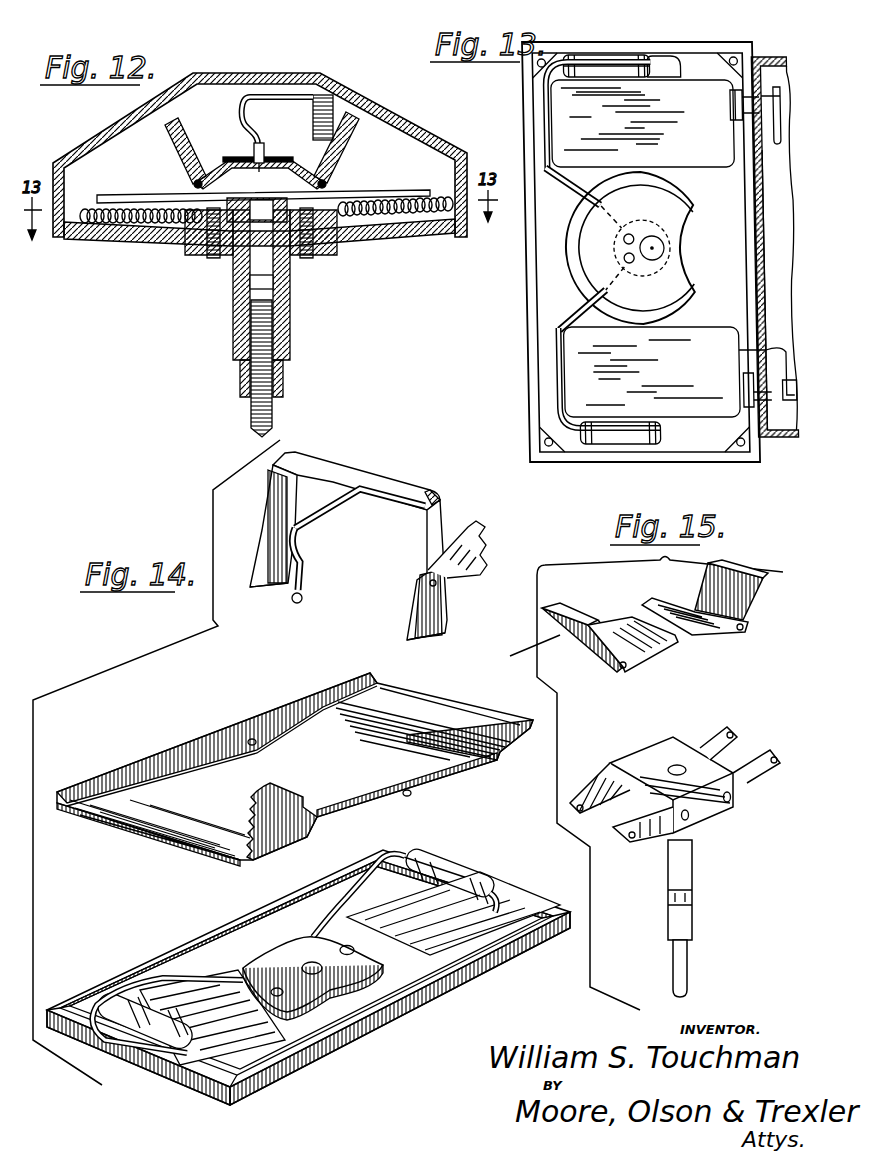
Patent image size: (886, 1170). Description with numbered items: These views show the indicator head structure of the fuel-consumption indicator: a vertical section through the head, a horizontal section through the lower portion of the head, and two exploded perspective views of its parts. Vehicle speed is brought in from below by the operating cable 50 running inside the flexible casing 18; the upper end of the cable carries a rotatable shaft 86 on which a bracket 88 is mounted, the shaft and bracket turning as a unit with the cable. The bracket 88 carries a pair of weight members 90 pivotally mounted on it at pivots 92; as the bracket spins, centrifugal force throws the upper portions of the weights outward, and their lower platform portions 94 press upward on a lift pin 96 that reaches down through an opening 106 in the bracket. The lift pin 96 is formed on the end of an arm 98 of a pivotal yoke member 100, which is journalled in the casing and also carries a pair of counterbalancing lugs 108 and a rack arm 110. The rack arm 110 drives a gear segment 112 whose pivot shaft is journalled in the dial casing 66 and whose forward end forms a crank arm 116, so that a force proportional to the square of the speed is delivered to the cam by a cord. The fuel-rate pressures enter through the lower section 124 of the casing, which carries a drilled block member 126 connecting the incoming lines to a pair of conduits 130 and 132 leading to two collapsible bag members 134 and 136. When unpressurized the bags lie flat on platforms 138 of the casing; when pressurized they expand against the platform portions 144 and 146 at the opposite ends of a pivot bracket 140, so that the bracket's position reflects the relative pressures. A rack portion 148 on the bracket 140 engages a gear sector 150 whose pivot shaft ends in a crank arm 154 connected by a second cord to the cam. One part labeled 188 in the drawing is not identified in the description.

In FIG. 12, the flexible casing 18 is at (283, 403).
In FIG. 12, the operating cable 50 is at (270, 432).
In FIG. 15, the operating cable 50 is at (690, 963).
In FIG. 13, the dial casing 66 is at (779, 290).
In FIG. 12, the rotatable shaft 86 is at (247, 262).
In FIG. 15, the rotatable shaft 86 is at (683, 893).
In FIG. 15, the bracket 88 is at (640, 757).
In FIG. 12, the weight members 90 is at (163, 132).
In FIG. 15, the weight members 90 is at (585, 608).
In FIG. 12, the pivotal mounting 92 is at (193, 180).
In FIG. 15, the lower platform portions 94 is at (652, 652).
In FIG. 12, the lift pin 96 is at (253, 146).
In FIG. 14, the lift pin 96 is at (302, 593).
In FIG. 14, the arm 98 is at (307, 518).
In FIG. 12, the pivotal yoke member 100 is at (333, 93).
In FIG. 14, the pivotal yoke member 100 is at (390, 483).
In FIG. 15, the opening 106 is at (677, 765).
In FIG. 14, the counterbalancing lugs 108 is at (265, 593).
In FIG. 14, the rack arm 110 is at (462, 534).
In FIG. 13, the gear segment 112 is at (729, 112).
In FIG. 13, the crank arm 116 is at (776, 247).
In FIG. 13, the lower section of casing 124 is at (533, 322).
In FIG. 14, the lower section of casing 124 is at (317, 1082).
In FIG. 12, the block member 126 is at (165, 240).
In FIG. 13, the block member 126 is at (680, 265).
In FIG. 14, the block member 126 is at (350, 1010).
In FIG. 13, the conduit 130 is at (548, 360).
In FIG. 14, the conduit 130 is at (170, 960).
In FIG. 13, the conduit 132 is at (540, 110).
In FIG. 14, the conduit 132 is at (323, 903).
In FIG. 12, the collapsible bag member 134 is at (95, 240).
In FIG. 13, the collapsible bag member 134 is at (710, 337).
In FIG. 14, the collapsible bag member 134 is at (217, 1050).
In FIG. 12, the collapsible bag member 136 is at (395, 233).
In FIG. 13, the collapsible bag member 136 is at (705, 152).
In FIG. 14, the collapsible bag member 136 is at (440, 950).
In FIG. 14, the platforms 138 is at (217, 1083).
In FIG. 12, the pivot bracket 140 is at (120, 200).
In FIG. 14, the pivot bracket 140 is at (213, 743).
In FIG. 14, the platform portion 144 is at (173, 830).
In FIG. 14, the platform portion 146 is at (400, 697).
In FIG. 14, the rack portion 148 is at (283, 797).
In FIG. 13, the gear sector 150 is at (737, 387).
In FIG. 13, the crank arm 154 is at (733, 352).
In FIG. 12, the bolt 188 is at (207, 257).